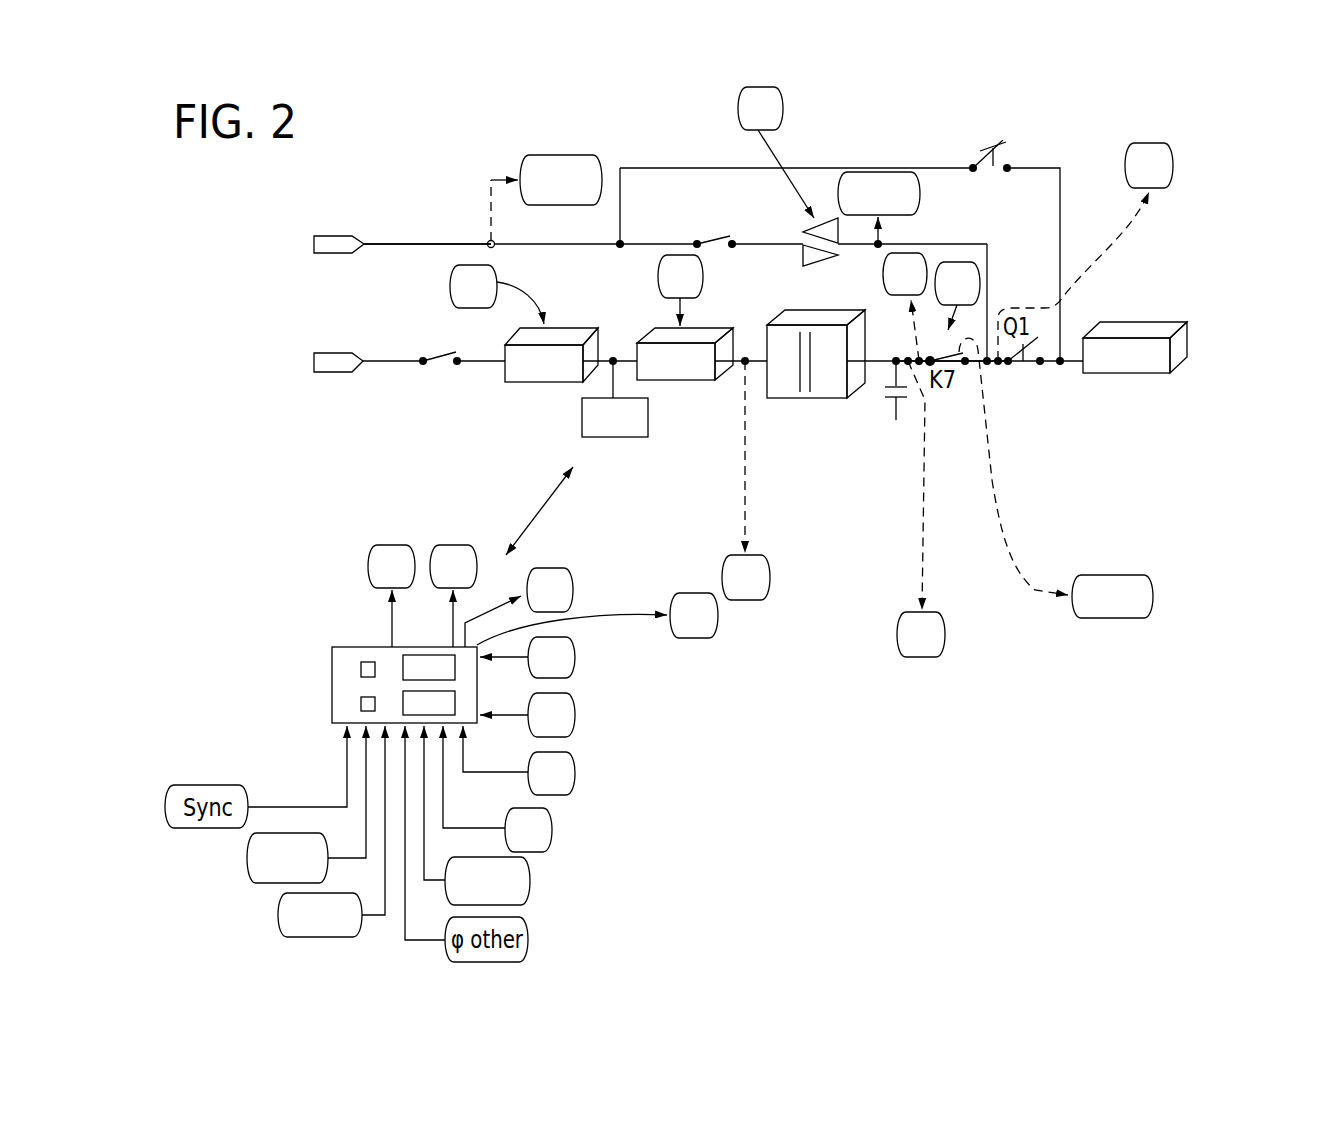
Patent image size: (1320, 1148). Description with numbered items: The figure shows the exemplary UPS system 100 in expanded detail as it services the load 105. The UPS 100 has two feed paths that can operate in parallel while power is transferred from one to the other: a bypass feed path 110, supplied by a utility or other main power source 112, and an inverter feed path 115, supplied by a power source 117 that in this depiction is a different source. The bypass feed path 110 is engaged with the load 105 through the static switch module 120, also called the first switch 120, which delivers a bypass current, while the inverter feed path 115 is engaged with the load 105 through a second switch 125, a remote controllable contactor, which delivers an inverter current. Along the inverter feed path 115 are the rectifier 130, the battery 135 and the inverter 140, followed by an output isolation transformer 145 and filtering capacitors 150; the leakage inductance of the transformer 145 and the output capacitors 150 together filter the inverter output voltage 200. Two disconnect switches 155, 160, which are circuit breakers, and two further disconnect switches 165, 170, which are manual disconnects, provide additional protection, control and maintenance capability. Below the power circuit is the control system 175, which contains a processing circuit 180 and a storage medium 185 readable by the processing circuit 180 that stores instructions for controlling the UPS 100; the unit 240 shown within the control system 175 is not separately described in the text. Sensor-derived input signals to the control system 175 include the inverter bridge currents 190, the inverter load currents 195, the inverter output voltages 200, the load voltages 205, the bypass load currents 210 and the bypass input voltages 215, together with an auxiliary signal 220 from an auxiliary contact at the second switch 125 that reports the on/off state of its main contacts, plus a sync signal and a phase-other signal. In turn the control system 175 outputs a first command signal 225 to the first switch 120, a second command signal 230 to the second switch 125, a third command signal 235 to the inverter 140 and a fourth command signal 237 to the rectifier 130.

The UPS system 100 is at (476, 160).
The load 105 is at (1140, 322).
The bypass feed path 110 is at (395, 244).
The power source 112 is at (314, 244).
The inverter feed path 115 is at (393, 361).
The power source 117 is at (314, 361).
The SSM (first switch) 120 is at (828, 217).
The second switch (K7) 125 is at (942, 362).
The rectifier 130 is at (540, 382).
The battery 135 is at (605, 437).
The inverter 140 is at (697, 380).
The output isolation transformer 145 is at (796, 310).
The filtering capacitors 150 is at (903, 365).
The disconnect switch (K4) 155 is at (440, 366).
The disconnect switch (K6) 160 is at (719, 248).
The disconnect switch (Q1) 165 is at (1030, 361).
The disconnect switch (Q2) 170 is at (1003, 140).
The control system 175 is at (332, 739).
The processing circuit 180 is at (361, 668).
The storage medium 185 is at (361, 703).
The inverter bridge currents (Ib) 190 is at (747, 600).
The inverter load currents (IL) 195 is at (883, 276).
The inverter output voltages (Uo) 200 is at (923, 657).
The load voltages (UL) 205 is at (1173, 165).
The bypass load currents (Ibyp) 210 is at (917, 172).
The bypass input voltages (Ubyp) 215 is at (555, 155).
The aux signal 220 is at (1122, 575).
The command signal (S1) 225 is at (738, 107).
The command signal (S2) 230 is at (958, 262).
The command signal (S3) 235 is at (658, 275).
The command signal (S4) 237 is at (450, 285).
The processing unit 240 is at (403, 667).